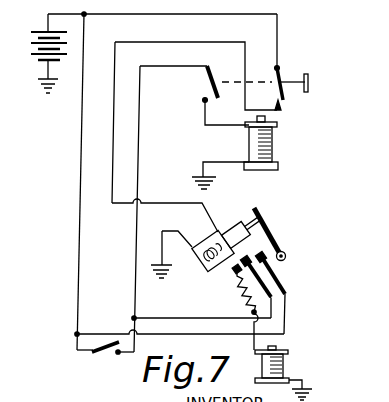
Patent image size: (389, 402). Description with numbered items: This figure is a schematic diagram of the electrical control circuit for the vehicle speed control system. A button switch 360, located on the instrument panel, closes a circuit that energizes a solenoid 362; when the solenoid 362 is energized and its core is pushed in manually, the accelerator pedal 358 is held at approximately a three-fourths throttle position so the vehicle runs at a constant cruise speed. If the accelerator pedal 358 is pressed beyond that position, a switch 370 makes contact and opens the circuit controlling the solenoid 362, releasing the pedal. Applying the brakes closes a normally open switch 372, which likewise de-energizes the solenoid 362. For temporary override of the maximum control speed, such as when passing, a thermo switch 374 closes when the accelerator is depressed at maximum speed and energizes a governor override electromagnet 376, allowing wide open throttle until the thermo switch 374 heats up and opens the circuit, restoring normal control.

The accelerator pedal 358 is at (265, 222).
The button switch 360 is at (307, 77).
The solenoid 362 is at (196, 272).
The switch 370 is at (274, 263).
The normally open switch 372 is at (97, 353).
The thermo switch 374 is at (235, 274).
The governor override electromagnet 376 is at (287, 365).